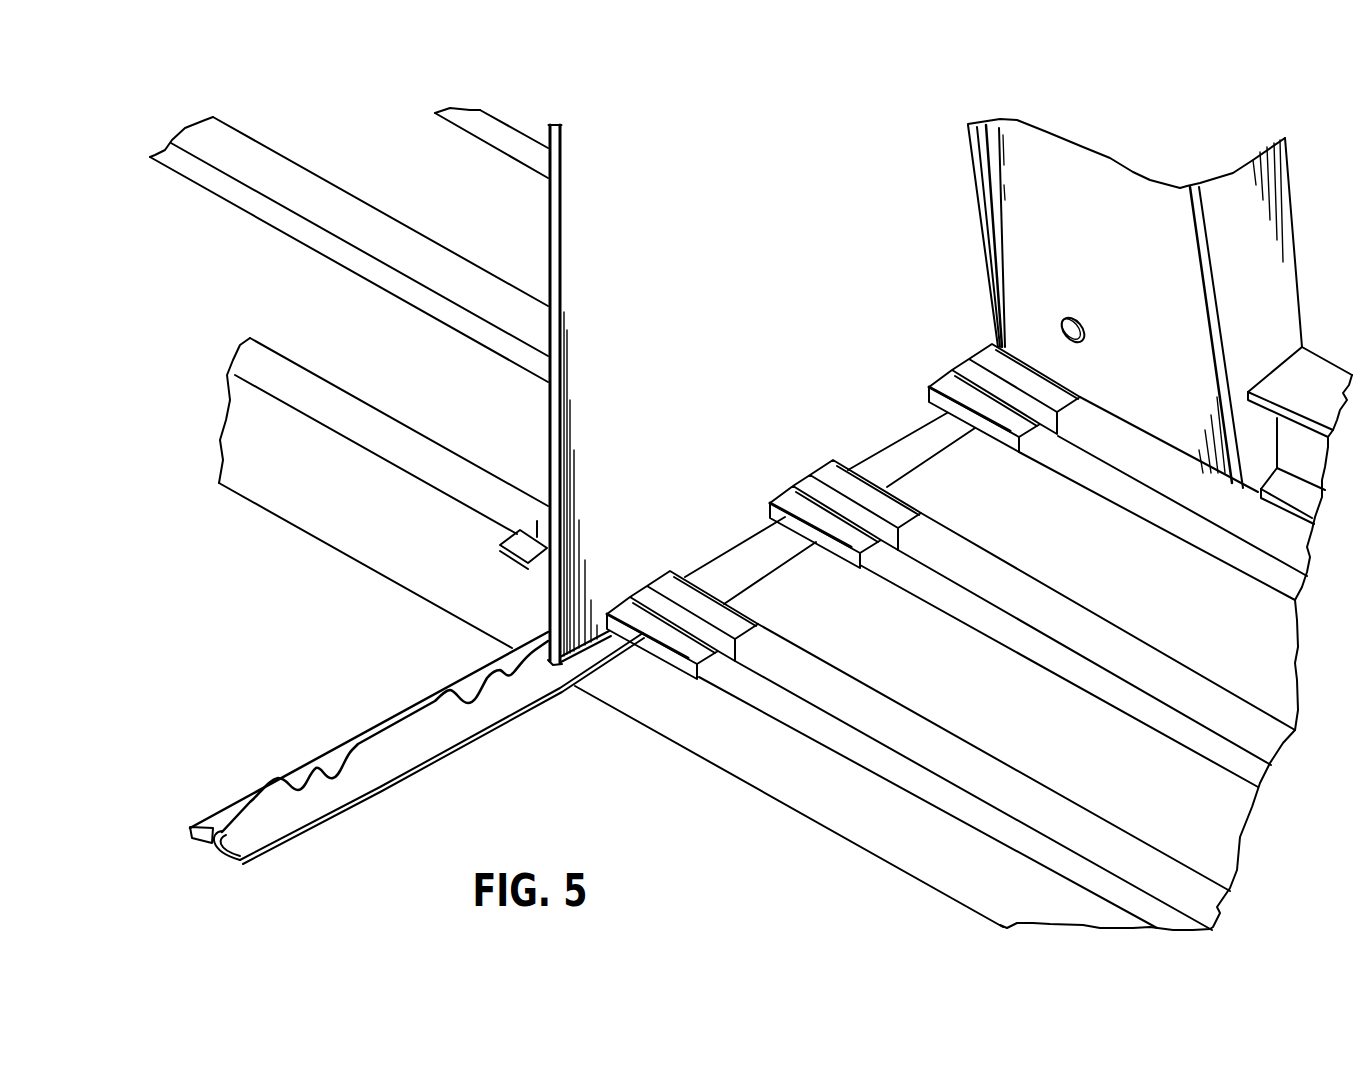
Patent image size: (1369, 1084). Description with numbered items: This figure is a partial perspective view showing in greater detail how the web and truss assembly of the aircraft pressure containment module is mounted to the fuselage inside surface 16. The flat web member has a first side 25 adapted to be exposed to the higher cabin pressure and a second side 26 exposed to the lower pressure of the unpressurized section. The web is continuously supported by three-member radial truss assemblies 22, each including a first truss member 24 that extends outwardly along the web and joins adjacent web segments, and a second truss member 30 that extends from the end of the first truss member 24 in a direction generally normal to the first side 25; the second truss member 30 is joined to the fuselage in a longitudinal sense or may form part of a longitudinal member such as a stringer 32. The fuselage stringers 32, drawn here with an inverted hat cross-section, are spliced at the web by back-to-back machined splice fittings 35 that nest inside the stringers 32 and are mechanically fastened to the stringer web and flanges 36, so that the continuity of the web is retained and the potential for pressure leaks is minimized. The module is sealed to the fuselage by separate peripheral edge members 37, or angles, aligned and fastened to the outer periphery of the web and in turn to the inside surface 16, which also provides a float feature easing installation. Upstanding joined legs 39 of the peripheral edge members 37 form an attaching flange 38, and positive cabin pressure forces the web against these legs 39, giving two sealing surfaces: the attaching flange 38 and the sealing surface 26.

The fuselage inside surface 16 is at (422, 570).
The radial truss assembly 22 is at (1288, 468).
The first truss member 24 is at (1202, 277).
The first side 25 is at (764, 341).
The second side 26 is at (548, 211).
The second truss member 30 is at (1293, 377).
The stringer 32 is at (930, 790).
The splice fitting 35 is at (528, 550).
The flange 36 is at (407, 448).
The peripheral edge member 37 is at (198, 838).
The attaching flange 38 is at (340, 748).
The upstanding joined leg 39 is at (213, 830).